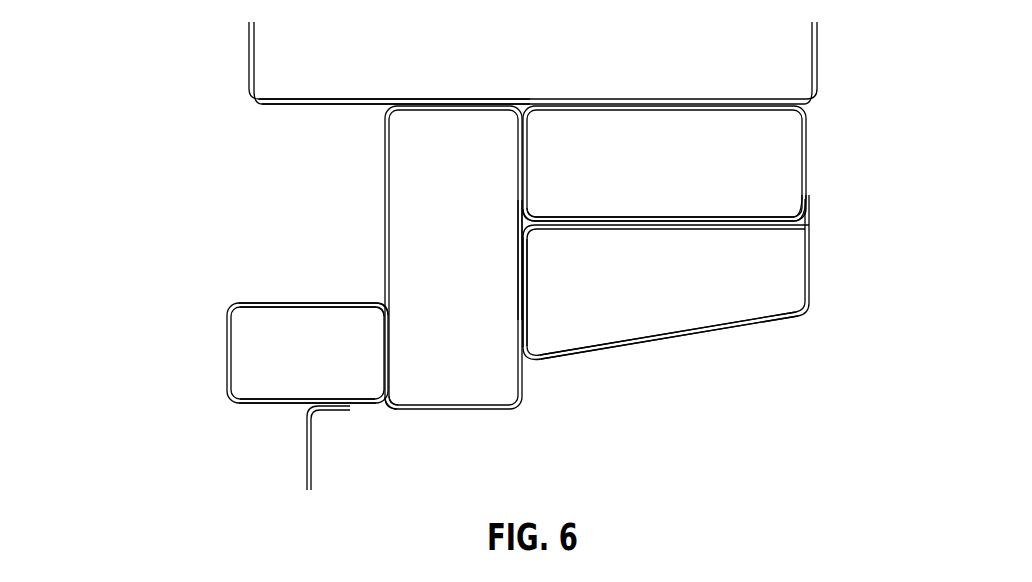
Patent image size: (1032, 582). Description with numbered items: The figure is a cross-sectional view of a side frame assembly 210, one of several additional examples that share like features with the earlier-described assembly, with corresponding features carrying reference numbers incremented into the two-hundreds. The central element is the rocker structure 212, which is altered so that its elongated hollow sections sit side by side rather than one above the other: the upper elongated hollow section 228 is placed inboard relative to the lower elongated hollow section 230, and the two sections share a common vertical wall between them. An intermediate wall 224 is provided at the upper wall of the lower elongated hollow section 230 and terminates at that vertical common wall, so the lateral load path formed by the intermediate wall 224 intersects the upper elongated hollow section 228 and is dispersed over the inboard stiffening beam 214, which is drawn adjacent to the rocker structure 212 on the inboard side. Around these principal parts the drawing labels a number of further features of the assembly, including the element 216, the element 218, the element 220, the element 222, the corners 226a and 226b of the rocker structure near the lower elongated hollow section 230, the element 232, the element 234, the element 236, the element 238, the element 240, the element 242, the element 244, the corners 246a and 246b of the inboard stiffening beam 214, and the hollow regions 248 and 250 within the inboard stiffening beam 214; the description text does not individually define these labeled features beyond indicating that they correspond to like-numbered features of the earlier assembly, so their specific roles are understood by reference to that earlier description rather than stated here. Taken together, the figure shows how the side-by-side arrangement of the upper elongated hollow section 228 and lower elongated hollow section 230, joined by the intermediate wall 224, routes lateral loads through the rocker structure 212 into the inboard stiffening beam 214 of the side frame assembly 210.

The side frame assembly 210 is at (160, 46).
The rocker structure 212 is at (442, 428).
The inboard stiffening beam 214 is at (685, 355).
The wall portion 216 is at (462, 99).
The bottom wall 218 is at (258, 405).
The side tube 220 is at (226, 350).
The side wall 222 is at (518, 256).
The intermediate wall 224 is at (282, 302).
The corner 226a is at (382, 326).
The corner 226b is at (366, 410).
The upper elongated hollow section 228 is at (469, 220).
The lower elongated hollow section 230 is at (326, 367).
The channel 232 is at (266, 194).
The flange 234 is at (318, 99).
The flange 236 is at (666, 99).
The bottom wall 238 is at (766, 322).
The side wall 240 is at (527, 282).
The outer wall 242 is at (810, 268).
The divider wall 244 is at (672, 217).
The corner 246a is at (548, 217).
The corner 246b is at (808, 205).
The upper cavity 248 is at (754, 183).
The lower cavity 250 is at (754, 285).